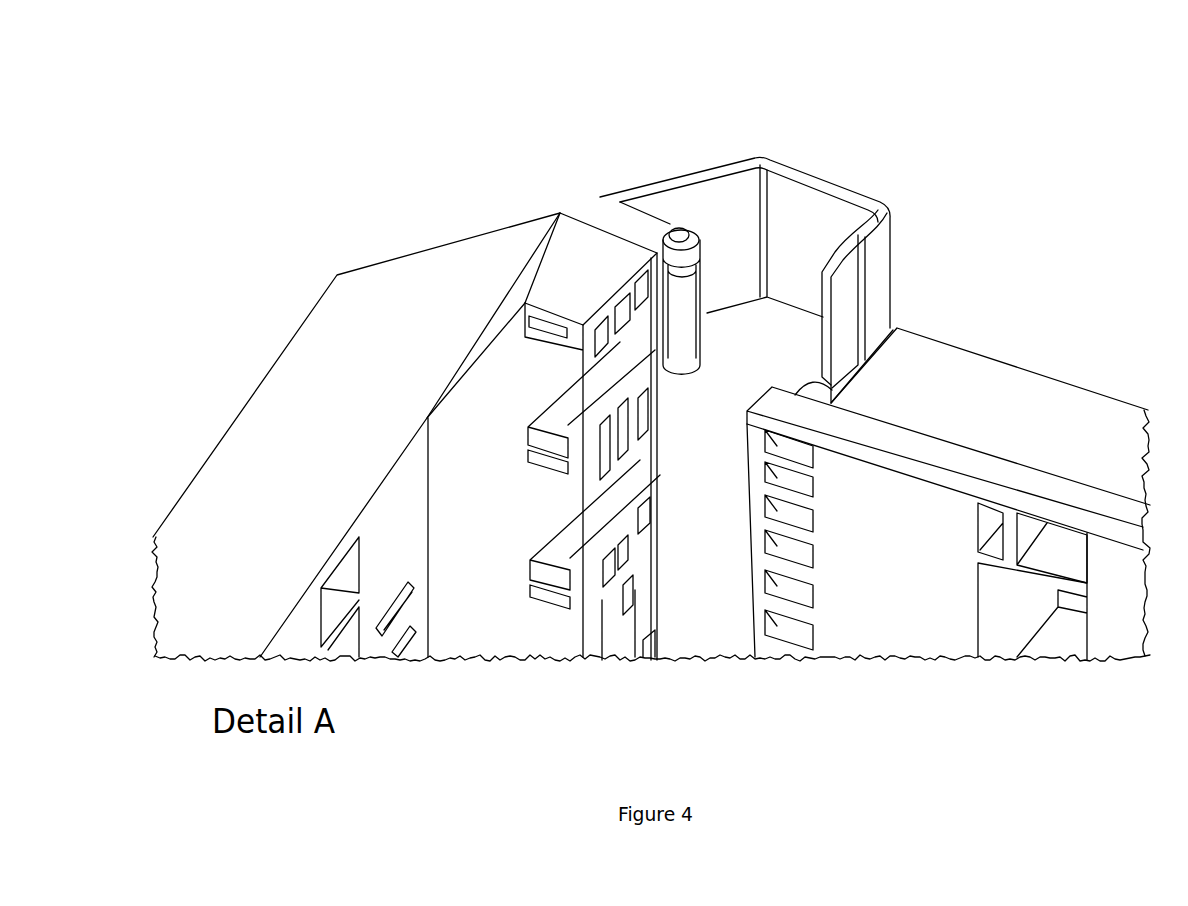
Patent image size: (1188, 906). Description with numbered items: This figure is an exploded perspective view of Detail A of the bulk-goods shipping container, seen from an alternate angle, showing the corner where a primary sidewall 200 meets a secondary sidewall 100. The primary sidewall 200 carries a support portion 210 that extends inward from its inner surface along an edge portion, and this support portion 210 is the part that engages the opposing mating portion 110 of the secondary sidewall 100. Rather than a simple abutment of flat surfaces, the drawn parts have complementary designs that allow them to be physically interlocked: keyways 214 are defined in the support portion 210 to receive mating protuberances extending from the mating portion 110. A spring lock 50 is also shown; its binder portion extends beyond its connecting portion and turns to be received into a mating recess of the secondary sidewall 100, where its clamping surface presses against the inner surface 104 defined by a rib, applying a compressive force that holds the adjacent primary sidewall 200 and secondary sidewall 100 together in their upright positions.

The spring lock 50 is at (790, 145).
The secondary sidewall 100 is at (1070, 375).
The inner surface of mating recess 104 is at (1023, 610).
The mating portion 110 is at (798, 412).
The primary sidewall 200 is at (283, 340).
The support portion 210 is at (575, 243).
The keyway 214 is at (615, 500).